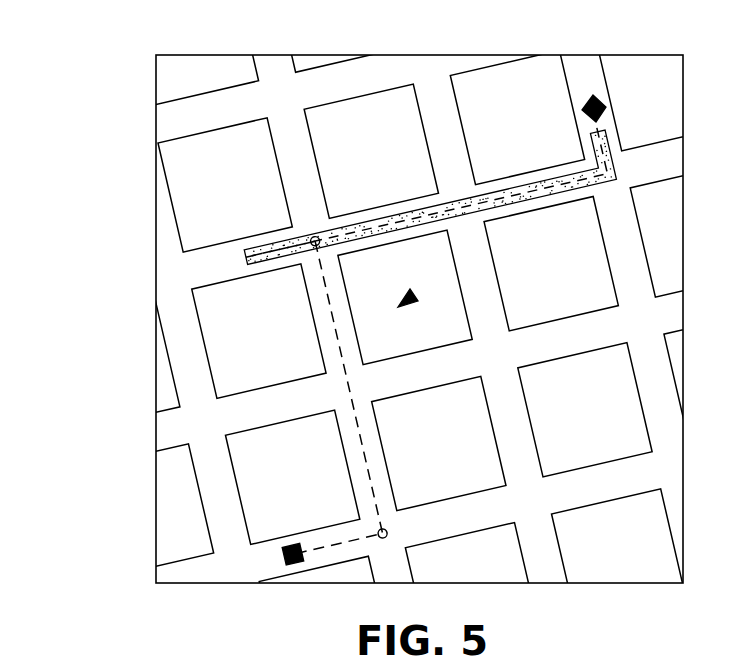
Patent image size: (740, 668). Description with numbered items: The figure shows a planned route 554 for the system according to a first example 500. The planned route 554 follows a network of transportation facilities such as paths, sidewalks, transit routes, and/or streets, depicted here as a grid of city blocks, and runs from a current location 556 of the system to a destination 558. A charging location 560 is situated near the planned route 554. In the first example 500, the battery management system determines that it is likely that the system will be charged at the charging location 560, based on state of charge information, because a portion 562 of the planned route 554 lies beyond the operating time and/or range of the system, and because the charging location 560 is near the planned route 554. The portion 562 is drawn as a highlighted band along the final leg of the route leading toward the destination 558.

The first example 500 is at (110, 53).
The planned route 554 is at (366, 458).
The current location 556 is at (282, 560).
The destination 558 is at (601, 99).
The charging location 560 is at (403, 298).
The portion 562 is at (416, 207).